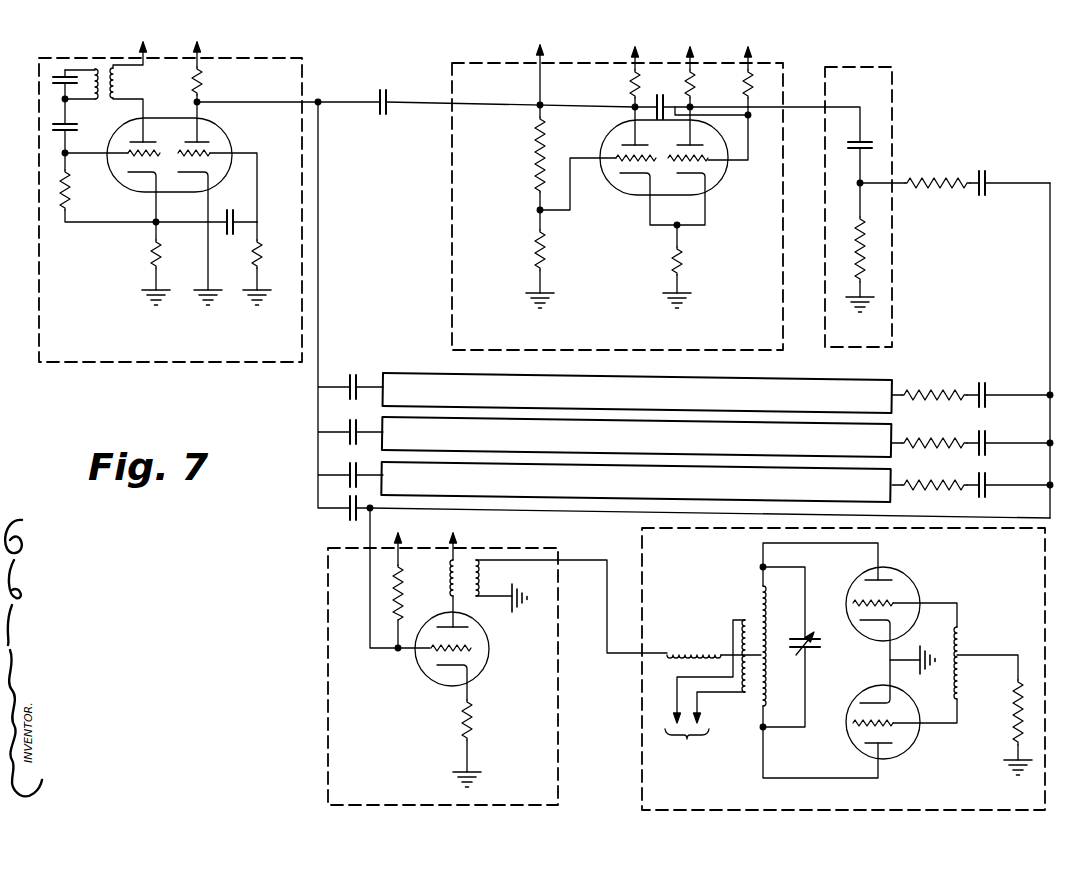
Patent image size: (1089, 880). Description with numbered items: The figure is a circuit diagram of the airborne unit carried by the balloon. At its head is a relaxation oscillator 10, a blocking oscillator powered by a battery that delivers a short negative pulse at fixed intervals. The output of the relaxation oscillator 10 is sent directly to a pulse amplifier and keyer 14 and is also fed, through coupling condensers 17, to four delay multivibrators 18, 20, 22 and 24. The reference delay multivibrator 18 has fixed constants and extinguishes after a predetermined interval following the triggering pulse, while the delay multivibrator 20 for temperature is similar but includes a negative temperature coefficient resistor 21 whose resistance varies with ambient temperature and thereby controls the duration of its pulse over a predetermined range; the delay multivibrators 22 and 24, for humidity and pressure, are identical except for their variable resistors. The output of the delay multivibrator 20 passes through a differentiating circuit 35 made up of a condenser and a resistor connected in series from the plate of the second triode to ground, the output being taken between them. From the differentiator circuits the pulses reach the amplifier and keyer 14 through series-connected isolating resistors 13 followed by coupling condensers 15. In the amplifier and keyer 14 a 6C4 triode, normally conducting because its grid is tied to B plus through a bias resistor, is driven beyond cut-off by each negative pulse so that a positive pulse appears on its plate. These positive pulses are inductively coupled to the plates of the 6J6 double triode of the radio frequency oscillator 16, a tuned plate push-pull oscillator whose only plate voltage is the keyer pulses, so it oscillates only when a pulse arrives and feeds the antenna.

The relaxation oscillator 10 is at (183, 362).
The isolating resistor 13 is at (946, 183).
The pulse amplifier and keyer 14 is at (558, 751).
The coupling condenser 15 is at (991, 176).
The radio frequency oscillator 16 is at (642, 718).
The coupling condenser 17 is at (390, 100).
The reference delay multivibrator 18 is at (422, 374).
The delay multivibrator 20 is at (452, 220).
The negative temperature coefficient resistor 21 is at (535, 251).
The delay multivibrator 22 is at (892, 419).
The delay multivibrator 24 is at (418, 495).
The differentiating circuit 35 is at (892, 108).